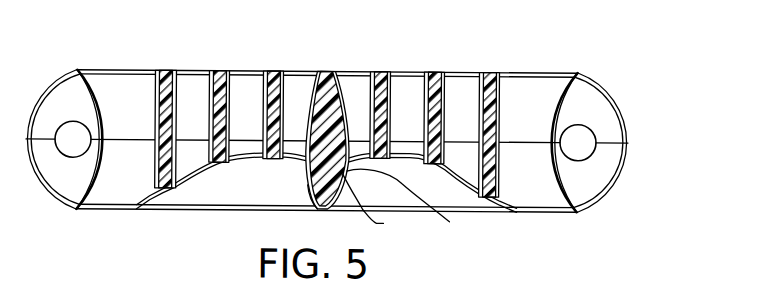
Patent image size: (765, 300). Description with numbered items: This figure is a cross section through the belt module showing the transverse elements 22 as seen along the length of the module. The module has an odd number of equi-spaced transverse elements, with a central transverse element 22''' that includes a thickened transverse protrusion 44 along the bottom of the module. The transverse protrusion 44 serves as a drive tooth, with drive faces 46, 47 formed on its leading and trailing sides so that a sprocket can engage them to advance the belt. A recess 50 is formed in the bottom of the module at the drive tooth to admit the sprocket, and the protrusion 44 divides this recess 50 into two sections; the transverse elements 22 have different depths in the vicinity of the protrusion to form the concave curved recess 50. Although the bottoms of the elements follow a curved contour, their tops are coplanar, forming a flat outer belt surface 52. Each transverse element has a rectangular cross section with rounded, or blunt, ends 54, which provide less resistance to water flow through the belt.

The transverse element 22 is at (508, 116).
The central transverse element 22''' is at (347, 123).
The transverse protrusion 44 is at (414, 202).
The drive face 46 is at (378, 204).
The drive face 47 is at (312, 200).
The recess 50 is at (256, 198).
The flat outer belt surface 52 is at (128, 72).
The rounded ends 54 is at (161, 74).